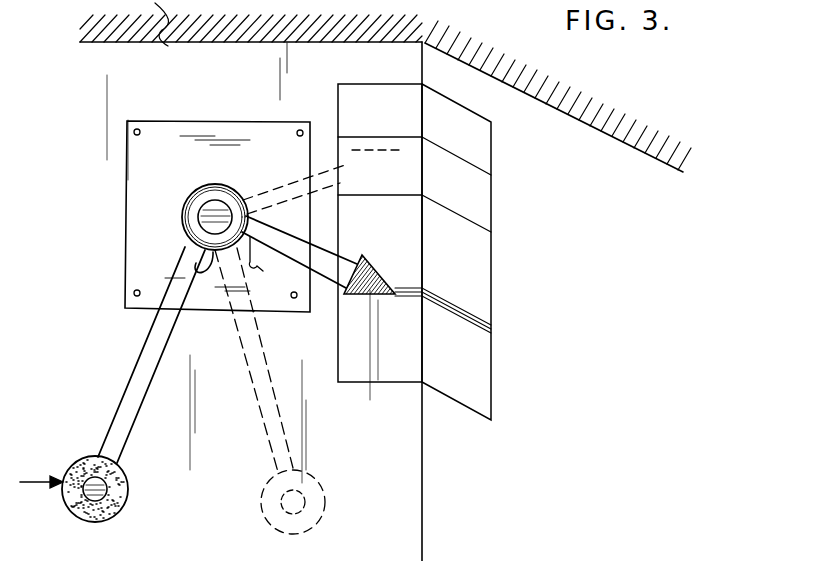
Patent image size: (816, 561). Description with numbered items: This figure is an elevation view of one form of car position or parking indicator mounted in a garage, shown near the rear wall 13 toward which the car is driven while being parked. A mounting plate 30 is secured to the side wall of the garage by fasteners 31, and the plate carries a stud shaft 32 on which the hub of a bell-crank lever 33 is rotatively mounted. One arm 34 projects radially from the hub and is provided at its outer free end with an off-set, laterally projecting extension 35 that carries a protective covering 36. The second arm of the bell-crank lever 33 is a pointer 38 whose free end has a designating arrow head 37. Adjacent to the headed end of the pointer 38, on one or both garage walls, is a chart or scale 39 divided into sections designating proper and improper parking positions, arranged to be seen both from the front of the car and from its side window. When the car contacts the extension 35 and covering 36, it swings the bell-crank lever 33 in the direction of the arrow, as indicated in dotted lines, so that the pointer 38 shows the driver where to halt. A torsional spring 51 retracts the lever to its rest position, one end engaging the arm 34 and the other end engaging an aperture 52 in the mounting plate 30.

The rear wall 13 is at (590, 147).
The mounting plate 30 is at (163, 128).
The fasteners 31 is at (134, 133).
The stud shaft 32 is at (206, 221).
The bell-crank lever 33 is at (219, 192).
The arm 34 is at (143, 369).
The off-set laterally projecting extension 35 is at (99, 486).
The protective covering 36 is at (74, 468).
The arrow head 37 is at (373, 270).
The pointer 38 is at (320, 262).
The chart or scale 39 is at (487, 157).
The torsional spring 51 is at (207, 186).
The aperture 52 is at (270, 262).